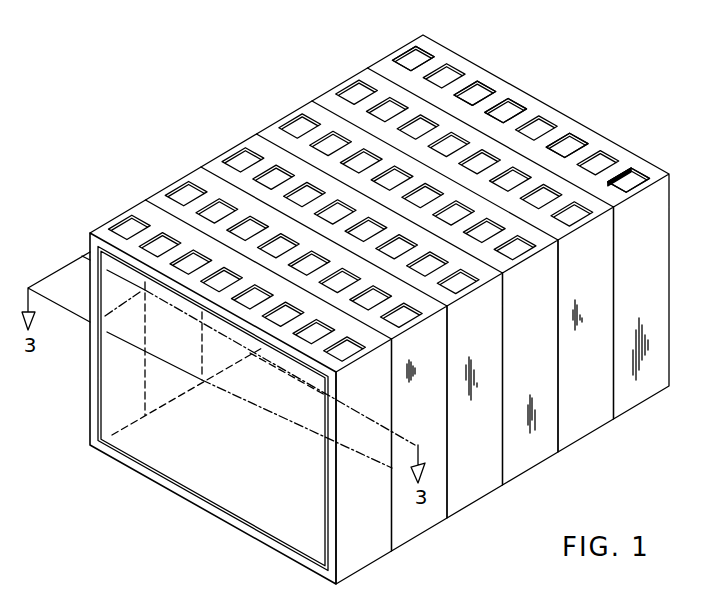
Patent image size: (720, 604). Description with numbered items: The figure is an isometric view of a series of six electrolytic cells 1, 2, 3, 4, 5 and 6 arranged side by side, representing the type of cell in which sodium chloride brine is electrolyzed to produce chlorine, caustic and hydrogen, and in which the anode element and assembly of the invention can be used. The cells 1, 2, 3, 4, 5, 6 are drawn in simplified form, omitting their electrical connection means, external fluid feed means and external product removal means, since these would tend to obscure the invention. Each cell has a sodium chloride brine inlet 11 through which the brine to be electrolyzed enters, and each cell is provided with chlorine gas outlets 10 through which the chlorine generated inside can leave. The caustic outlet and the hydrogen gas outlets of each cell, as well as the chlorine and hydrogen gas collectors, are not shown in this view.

The electrolytic cell 1 is at (117, 213).
The electrolytic cell 2 is at (167, 187).
The electrolytic cell 3 is at (213, 153).
The electrolytic cell 4 is at (270, 120).
The electrolytic cell 5 is at (320, 90).
The electrolytic cell 6 is at (383, 58).
The chlorine gas outlets 10 is at (559, 135).
The sodium chloride brine inlet 11 is at (434, 603).